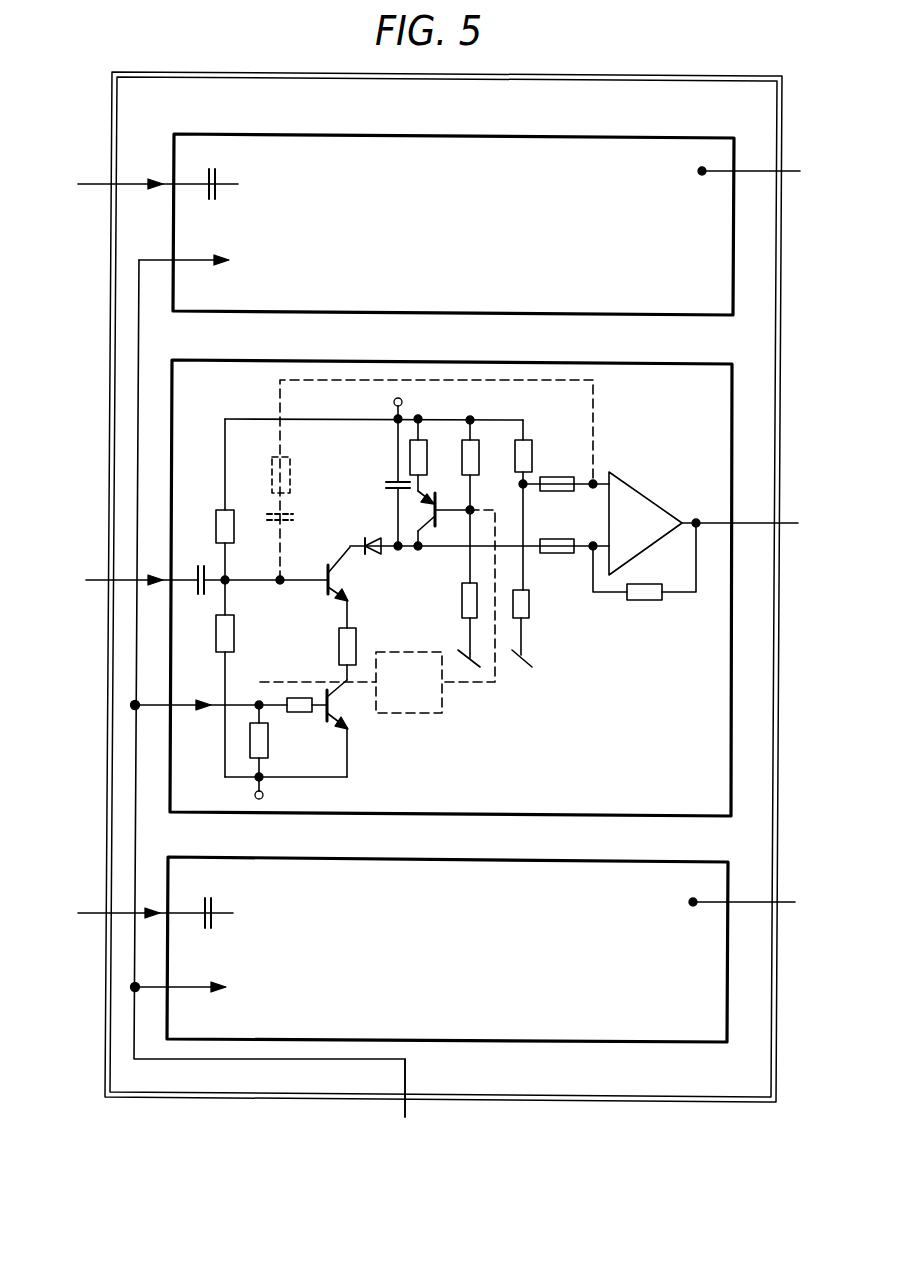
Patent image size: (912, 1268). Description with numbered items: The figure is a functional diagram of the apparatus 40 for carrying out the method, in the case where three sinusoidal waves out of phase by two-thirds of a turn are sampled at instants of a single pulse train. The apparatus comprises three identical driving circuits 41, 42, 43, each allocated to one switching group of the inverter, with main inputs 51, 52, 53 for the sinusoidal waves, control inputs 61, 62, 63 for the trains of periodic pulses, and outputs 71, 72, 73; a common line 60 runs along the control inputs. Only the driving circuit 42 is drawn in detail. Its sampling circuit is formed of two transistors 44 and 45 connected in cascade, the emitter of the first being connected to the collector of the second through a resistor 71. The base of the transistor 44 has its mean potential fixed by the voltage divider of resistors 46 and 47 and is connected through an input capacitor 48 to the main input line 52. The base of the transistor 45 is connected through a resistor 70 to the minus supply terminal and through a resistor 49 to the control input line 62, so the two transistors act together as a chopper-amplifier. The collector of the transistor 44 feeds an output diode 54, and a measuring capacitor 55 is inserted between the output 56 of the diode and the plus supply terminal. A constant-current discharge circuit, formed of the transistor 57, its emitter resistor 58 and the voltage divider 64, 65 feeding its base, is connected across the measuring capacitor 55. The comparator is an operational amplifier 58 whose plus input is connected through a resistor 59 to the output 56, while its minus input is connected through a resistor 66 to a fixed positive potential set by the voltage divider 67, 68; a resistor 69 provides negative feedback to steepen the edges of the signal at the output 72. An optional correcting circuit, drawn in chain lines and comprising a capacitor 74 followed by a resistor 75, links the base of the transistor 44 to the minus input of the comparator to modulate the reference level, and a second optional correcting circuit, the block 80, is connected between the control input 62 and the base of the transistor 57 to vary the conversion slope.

The apparatus 40 is at (232, 1092).
The driving circuit 41 is at (453, 224).
The driving circuit 42 is at (451, 588).
The driving circuit 43 is at (447, 949).
The transistor 44 is at (328, 588).
The transistor 45 is at (332, 732).
The resistor 46 is at (218, 520).
The resistor 47 is at (218, 636).
The input capacitor 48 is at (206, 578).
The resistor 49 is at (300, 700).
The main input 51 is at (98, 183).
The main input line 52 is at (100, 580).
The main input 53 is at (98, 912).
The output diode 54 is at (380, 552).
The measuring capacitor 55 is at (386, 485).
The output of the diode 56 is at (410, 550).
The transistor 57 is at (440, 500).
The emitter resistor / operational amplifier 58 is at (420, 468).
The resistor 59 is at (556, 552).
The common line 60 is at (405, 1112).
The control input 61 is at (170, 260).
The control input line 62 is at (152, 704).
The control input 63 is at (150, 986).
The voltage divider resistor 64 is at (474, 468).
The voltage divider resistor 65 is at (466, 610).
The resistor 66 is at (556, 488).
The voltage divider resistor 67 is at (528, 466).
The voltage divider resistor 68 is at (528, 610).
The resistor 69 is at (642, 602).
The resistor 70 is at (256, 760).
The resistor / output 71 is at (742, 172).
The output 72 is at (740, 525).
The output 73 is at (734, 904).
The capacitor 74 is at (292, 518).
The resistor 75 is at (285, 466).
The block 80 is at (425, 684).